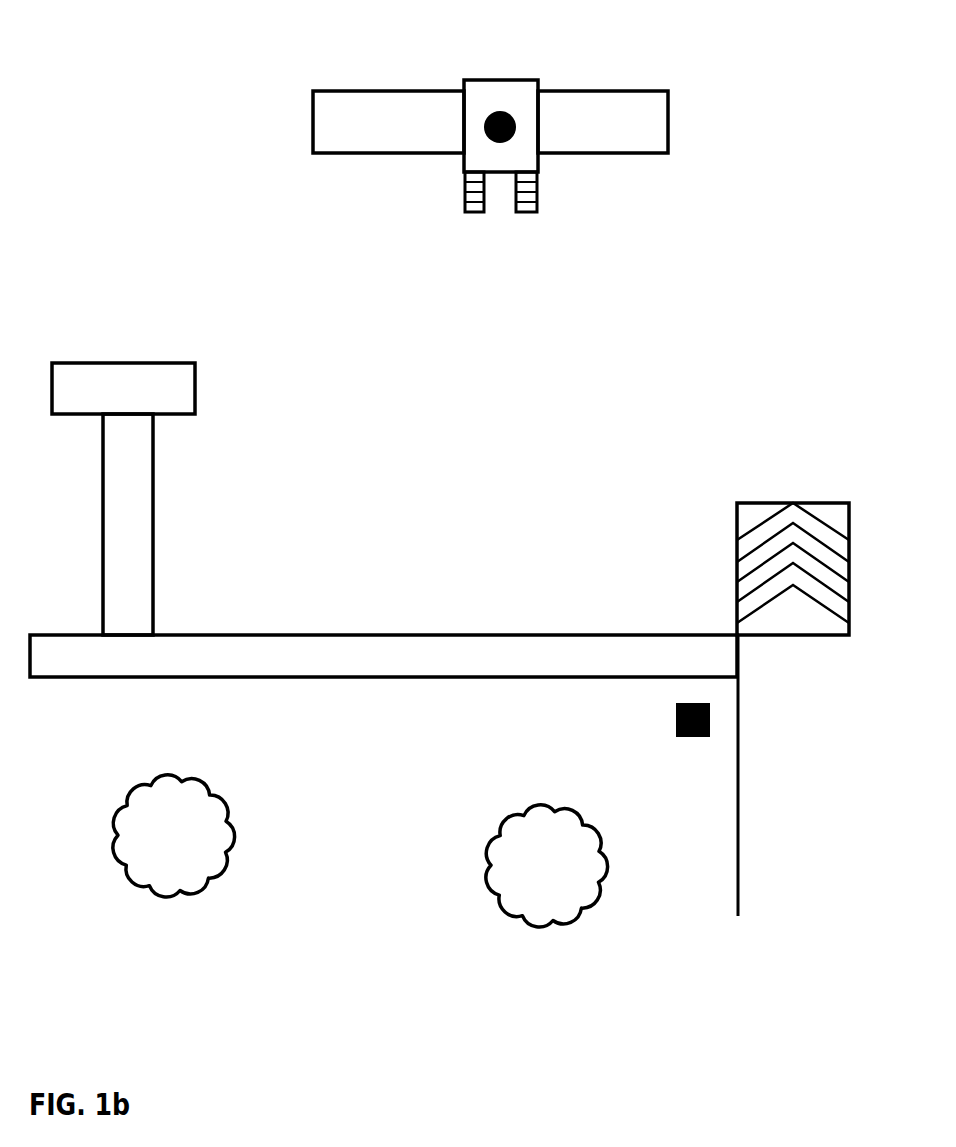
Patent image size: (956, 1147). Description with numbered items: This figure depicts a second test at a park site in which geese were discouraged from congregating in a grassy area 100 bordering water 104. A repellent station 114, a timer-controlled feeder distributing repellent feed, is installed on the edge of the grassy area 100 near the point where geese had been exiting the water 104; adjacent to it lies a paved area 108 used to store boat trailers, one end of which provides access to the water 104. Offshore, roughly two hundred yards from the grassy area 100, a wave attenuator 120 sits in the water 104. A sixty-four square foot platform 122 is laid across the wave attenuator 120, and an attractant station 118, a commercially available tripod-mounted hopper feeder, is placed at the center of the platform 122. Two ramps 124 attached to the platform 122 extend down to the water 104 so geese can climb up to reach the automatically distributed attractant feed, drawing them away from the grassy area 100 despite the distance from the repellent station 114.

The grassy area 100 is at (360, 851).
The water 104 is at (439, 520).
The paved area 108 is at (781, 775).
The repellent station 114 is at (692, 703).
The attractant station 118 is at (513, 115).
The wave attenuator 120 is at (385, 113).
The platform 122 is at (525, 151).
The ramps 124 is at (478, 212).